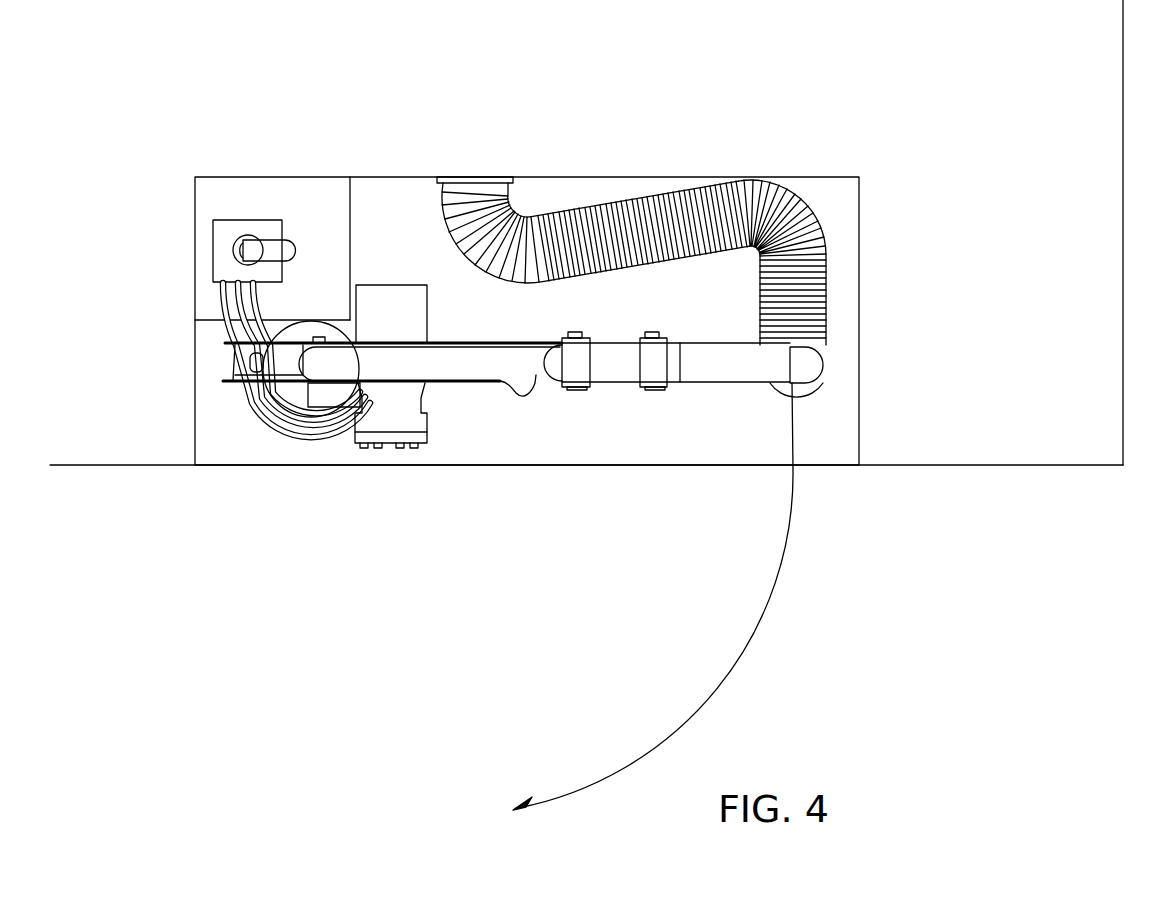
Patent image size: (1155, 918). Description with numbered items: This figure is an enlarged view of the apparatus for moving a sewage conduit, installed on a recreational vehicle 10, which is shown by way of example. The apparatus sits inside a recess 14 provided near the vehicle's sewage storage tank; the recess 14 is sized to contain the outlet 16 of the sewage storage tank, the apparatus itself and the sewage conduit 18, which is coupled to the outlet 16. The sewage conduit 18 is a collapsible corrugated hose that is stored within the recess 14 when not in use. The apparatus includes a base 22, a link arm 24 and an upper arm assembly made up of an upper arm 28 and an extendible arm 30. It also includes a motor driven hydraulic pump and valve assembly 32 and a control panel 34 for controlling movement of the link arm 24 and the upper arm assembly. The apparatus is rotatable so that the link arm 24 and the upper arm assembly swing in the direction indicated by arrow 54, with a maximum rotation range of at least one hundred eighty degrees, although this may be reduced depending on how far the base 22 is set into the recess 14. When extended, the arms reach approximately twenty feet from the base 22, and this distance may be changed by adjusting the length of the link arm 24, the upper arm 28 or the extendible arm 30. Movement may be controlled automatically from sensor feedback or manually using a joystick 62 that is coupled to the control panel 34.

The recreational vehicle 10 is at (794, 84).
The recess 14 is at (859, 292).
The outlet 16 is at (517, 190).
The sewage conduit 18 is at (800, 223).
The base 22 is at (318, 402).
The link arm 24 is at (402, 385).
The upper arm 28 is at (706, 365).
The extendible arm 30 is at (806, 366).
The motor driven hydraulic pump and valve assembly 32 is at (403, 329).
The control panel 34 is at (226, 236).
The arrow 54 is at (752, 627).
The joystick 62 is at (287, 248).